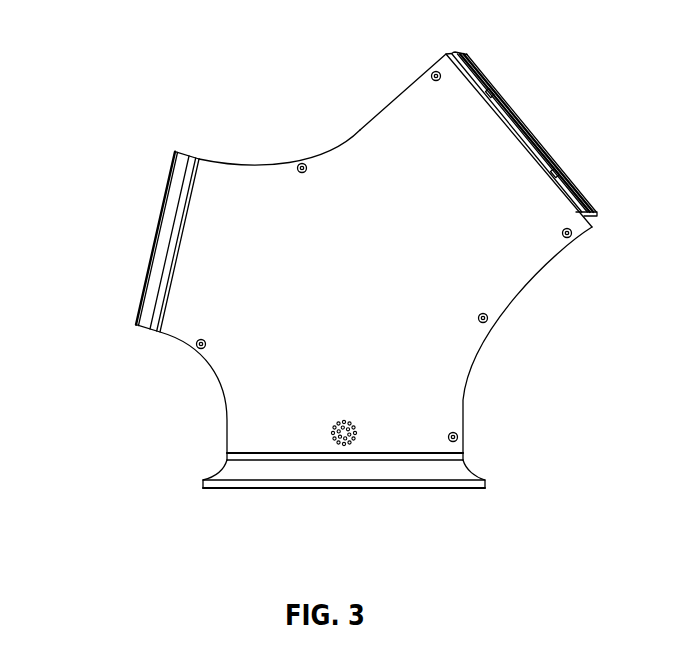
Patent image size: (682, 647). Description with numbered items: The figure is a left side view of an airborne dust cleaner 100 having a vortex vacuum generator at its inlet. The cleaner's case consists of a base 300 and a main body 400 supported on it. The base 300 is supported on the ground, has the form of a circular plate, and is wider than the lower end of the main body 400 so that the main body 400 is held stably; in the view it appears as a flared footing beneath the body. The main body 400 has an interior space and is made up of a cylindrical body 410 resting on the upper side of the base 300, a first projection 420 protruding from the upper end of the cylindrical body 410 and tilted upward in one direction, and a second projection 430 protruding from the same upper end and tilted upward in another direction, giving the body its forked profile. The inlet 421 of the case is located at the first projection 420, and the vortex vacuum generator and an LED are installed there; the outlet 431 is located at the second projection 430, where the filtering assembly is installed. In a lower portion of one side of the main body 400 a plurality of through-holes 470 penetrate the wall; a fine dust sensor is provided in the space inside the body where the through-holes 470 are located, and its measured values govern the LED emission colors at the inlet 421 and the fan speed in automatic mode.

The airborne dust cleaner 100 is at (117, 32).
The base 300 is at (466, 470).
The main body 400 is at (517, 322).
The cylindrical body 410 is at (265, 405).
The first projection 420 is at (416, 112).
The inlet 421 is at (530, 124).
The second projection 430 is at (239, 190).
The outlet 431 is at (143, 245).
The through-holes 470 is at (353, 441).